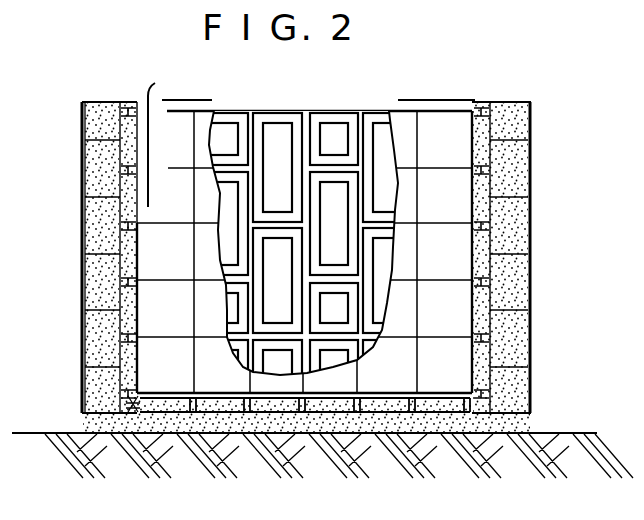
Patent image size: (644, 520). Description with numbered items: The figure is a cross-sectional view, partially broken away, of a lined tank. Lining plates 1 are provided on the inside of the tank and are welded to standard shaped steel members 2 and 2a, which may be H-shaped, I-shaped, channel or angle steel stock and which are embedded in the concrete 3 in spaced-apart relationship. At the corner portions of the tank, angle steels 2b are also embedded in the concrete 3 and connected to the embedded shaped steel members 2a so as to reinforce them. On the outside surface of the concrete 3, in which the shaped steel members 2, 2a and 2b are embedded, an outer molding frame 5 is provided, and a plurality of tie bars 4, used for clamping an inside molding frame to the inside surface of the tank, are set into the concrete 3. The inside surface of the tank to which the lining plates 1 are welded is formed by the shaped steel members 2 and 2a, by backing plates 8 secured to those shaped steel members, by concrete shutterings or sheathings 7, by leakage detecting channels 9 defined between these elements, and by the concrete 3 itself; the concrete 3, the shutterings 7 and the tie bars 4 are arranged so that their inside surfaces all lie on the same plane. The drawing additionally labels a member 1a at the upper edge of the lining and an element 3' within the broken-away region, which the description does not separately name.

The lining plates 1 is at (139, 244).
The panel edge member 1a is at (167, 138).
The shaped steel members 2 is at (132, 337).
The shaped steel members 2a is at (137, 407).
The angle steels 2b is at (130, 404).
The concrete 3 is at (83, 257).
The tile element 3' is at (276, 148).
The tie bars 4 is at (98, 366).
The outer molding frame 5 is at (80, 219).
The concrete shutterings 7 is at (340, 121).
The backing plates 8 is at (309, 128).
The leakage detecting channels 9 is at (373, 115).